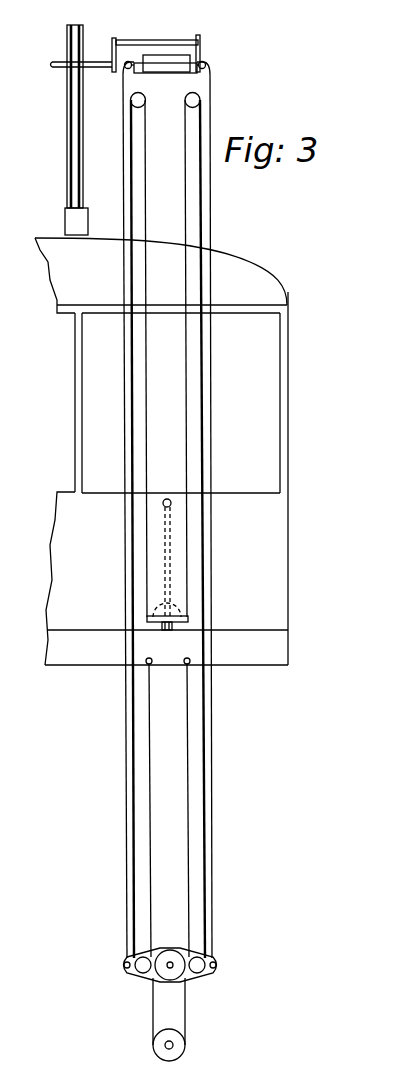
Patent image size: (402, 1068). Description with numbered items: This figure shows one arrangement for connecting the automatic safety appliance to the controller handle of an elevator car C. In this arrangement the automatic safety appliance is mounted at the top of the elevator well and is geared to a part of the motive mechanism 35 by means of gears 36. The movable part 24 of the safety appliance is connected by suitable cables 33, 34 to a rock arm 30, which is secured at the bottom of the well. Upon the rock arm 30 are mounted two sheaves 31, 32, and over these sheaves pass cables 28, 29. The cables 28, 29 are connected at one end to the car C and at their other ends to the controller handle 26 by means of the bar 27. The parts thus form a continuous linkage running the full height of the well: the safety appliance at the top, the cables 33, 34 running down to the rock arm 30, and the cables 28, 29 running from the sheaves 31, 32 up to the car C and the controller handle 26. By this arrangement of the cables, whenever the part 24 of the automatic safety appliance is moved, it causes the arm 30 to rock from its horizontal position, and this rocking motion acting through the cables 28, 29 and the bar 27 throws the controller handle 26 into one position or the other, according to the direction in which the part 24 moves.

The movable part of the automatic safety appliance 24 is at (157, 62).
The controller handle 26 is at (170, 557).
The bar 27 is at (177, 605).
The cable 28 is at (188, 472).
The cable 29 is at (148, 448).
The rock arm 30 is at (167, 947).
The sheave 31 is at (200, 957).
The sheave 32 is at (143, 957).
The cable 33 is at (213, 753).
The cable 34 is at (125, 707).
The motive mechanism 35 is at (85, 37).
The gears 36 is at (122, 35).
The car C is at (263, 385).